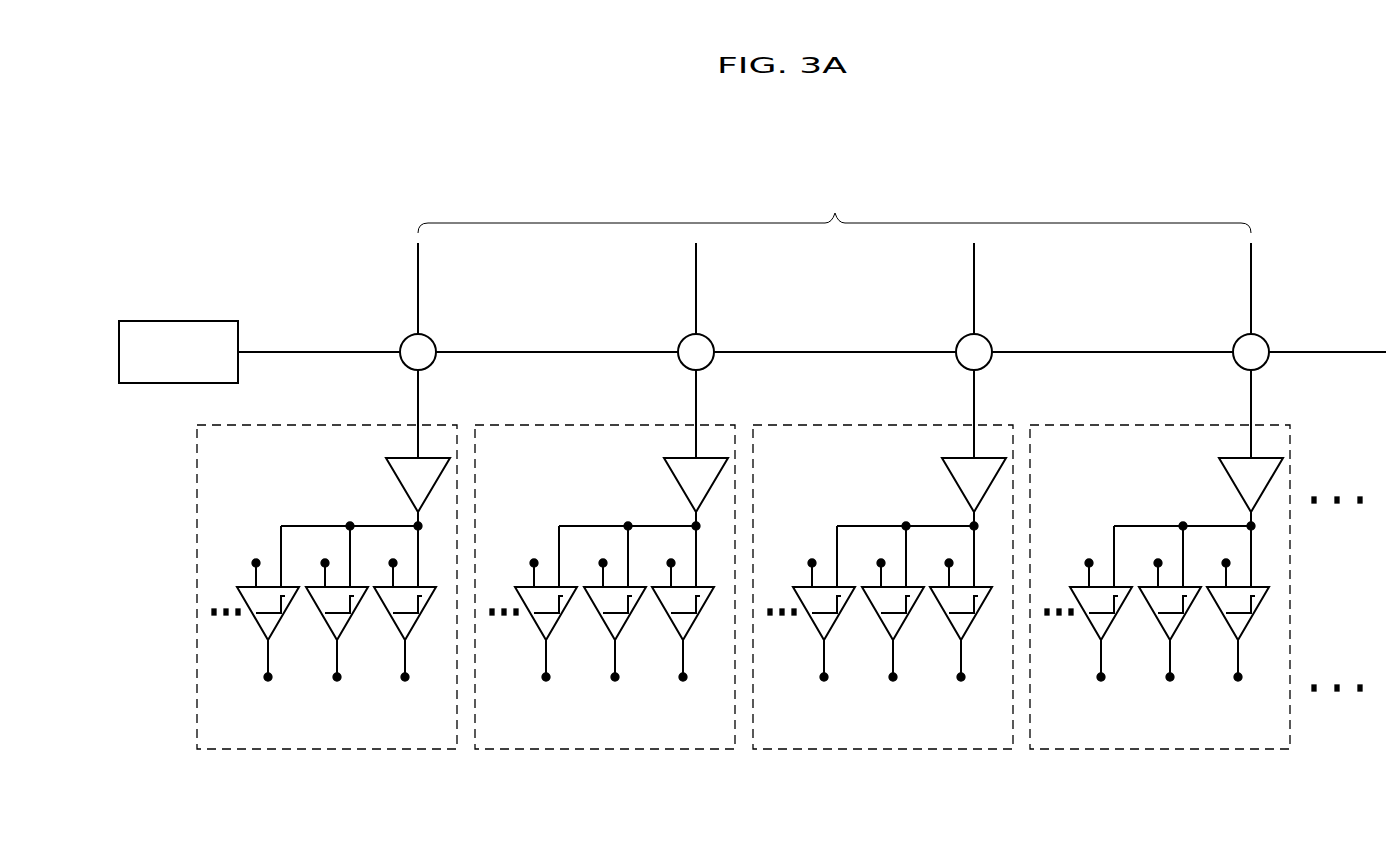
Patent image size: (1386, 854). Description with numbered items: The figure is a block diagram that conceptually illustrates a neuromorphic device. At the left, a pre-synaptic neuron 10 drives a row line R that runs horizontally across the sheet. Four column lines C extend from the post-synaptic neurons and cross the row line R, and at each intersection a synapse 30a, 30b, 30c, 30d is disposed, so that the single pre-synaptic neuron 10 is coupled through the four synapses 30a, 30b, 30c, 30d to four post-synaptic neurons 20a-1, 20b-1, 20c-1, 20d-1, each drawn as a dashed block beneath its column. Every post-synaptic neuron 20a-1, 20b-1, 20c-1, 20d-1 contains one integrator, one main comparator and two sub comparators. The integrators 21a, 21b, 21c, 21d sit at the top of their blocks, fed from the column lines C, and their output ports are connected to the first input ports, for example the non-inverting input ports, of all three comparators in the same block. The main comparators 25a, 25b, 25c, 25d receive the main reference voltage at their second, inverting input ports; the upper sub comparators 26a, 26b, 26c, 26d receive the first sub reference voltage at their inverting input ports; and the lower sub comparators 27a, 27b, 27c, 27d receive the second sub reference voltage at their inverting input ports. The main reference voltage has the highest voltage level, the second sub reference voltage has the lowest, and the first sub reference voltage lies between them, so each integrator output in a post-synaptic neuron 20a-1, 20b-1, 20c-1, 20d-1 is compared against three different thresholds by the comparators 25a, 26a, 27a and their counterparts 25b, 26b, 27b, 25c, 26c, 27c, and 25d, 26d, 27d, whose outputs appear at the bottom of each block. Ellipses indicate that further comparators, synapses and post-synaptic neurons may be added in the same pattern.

The pre-synaptic neuron 10 is at (217, 320).
The row line R is at (1340, 352).
The column lines C is at (834, 212).
The synapse 30a is at (425, 345).
The synapse 30b is at (714, 306).
The synapse 30c is at (992, 306).
The synapse 30d is at (1269, 306).
The post-synaptic neuron 20a-1 is at (327, 587).
The post-synaptic neuron 20b-1 is at (605, 587).
The post-synaptic neuron 20c-1 is at (883, 587).
The post-synaptic neuron 20d-1 is at (1160, 587).
The integrator 21a is at (402, 487).
The integrator 21b is at (670, 448).
The integrator 21c is at (948, 448).
The integrator 21d is at (1225, 448).
The main comparator 25a is at (397, 627).
The main comparator 25b is at (671, 621).
The main comparator 25c is at (949, 621).
The main comparator 25d is at (1226, 621).
The upper sub comparator 26a is at (329, 627).
The upper sub comparator 26b is at (603, 621).
The upper sub comparator 26c is at (881, 621).
The upper sub comparator 26d is at (1158, 621).
The lower sub comparator 27a is at (260, 627).
The lower sub comparator 27b is at (534, 621).
The lower sub comparator 27c is at (812, 621).
The lower sub comparator 27d is at (1089, 621).